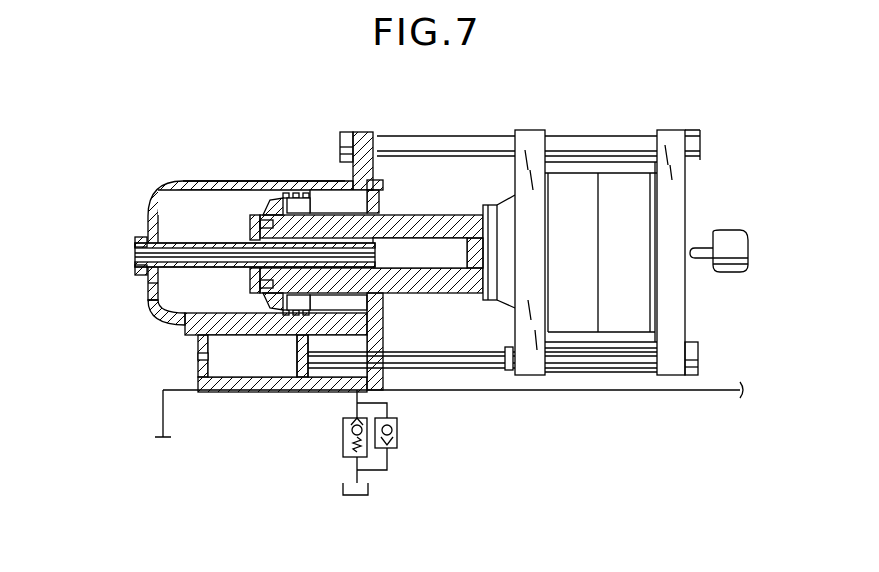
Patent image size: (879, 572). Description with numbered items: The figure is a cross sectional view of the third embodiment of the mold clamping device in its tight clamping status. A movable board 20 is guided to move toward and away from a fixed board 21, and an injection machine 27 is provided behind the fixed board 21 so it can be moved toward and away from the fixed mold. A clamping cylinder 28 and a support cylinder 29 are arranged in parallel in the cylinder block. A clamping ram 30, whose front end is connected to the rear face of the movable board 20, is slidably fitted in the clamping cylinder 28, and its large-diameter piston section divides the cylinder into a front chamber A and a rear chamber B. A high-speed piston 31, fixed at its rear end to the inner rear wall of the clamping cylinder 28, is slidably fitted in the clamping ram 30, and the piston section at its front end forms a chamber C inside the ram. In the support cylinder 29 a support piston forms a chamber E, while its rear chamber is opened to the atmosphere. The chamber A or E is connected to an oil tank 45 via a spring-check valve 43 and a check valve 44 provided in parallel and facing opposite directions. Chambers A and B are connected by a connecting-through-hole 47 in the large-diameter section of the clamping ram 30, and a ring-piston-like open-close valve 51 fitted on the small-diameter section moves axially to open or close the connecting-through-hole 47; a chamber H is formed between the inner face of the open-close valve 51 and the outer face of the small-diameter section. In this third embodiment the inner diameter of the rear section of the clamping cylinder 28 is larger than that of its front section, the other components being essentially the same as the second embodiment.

The movable board 20 is at (532, 136).
The fixed board 21 is at (680, 138).
The injection machine 27 is at (732, 237).
The clamping cylinder 28 is at (183, 200).
The support cylinder 29 is at (238, 395).
The clamping ram 30 is at (396, 213).
The high-speed piston 31 is at (165, 243).
The spring-check valve 43 is at (343, 448).
The check valve 44 is at (397, 440).
The oil tank 45 is at (360, 497).
The connecting-through-hole 47 is at (320, 197).
The open-close valve 51 is at (267, 208).
The front chamber A is at (342, 198).
The rear chamber B is at (152, 210).
The chamber C is at (450, 247).
The chamber E is at (323, 368).
The chamber H is at (212, 188).